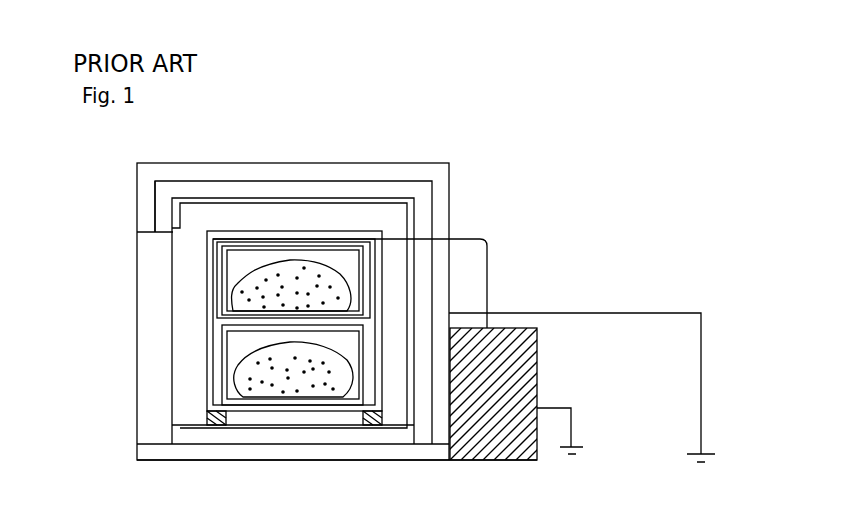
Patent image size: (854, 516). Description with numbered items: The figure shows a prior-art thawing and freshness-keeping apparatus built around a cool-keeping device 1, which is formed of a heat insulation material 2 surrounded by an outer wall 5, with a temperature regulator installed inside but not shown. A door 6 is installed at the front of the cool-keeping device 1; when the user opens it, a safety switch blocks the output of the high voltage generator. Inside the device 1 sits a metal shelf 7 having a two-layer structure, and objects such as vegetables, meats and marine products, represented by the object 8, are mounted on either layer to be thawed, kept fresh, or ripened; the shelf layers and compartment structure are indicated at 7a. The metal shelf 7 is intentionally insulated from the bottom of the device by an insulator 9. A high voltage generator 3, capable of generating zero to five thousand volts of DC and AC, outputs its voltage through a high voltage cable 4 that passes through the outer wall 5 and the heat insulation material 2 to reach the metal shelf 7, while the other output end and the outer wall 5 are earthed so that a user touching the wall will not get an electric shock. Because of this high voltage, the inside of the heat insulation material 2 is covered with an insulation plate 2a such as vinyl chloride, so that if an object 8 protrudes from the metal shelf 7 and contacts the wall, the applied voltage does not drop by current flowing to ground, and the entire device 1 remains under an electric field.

The cool-keeping device 1 is at (297, 163).
The heat insulation material 2 is at (427, 201).
The insulation plate 2a is at (220, 197).
The high voltage generator 3 is at (537, 389).
The high voltage cable 4 is at (488, 279).
The outer wall 5 is at (395, 452).
The door 6 is at (148, 375).
The metal shelf 7 is at (220, 250).
The cell compartment 7a is at (245, 330).
The object 8 is at (247, 282).
The insulator 9 is at (360, 428).